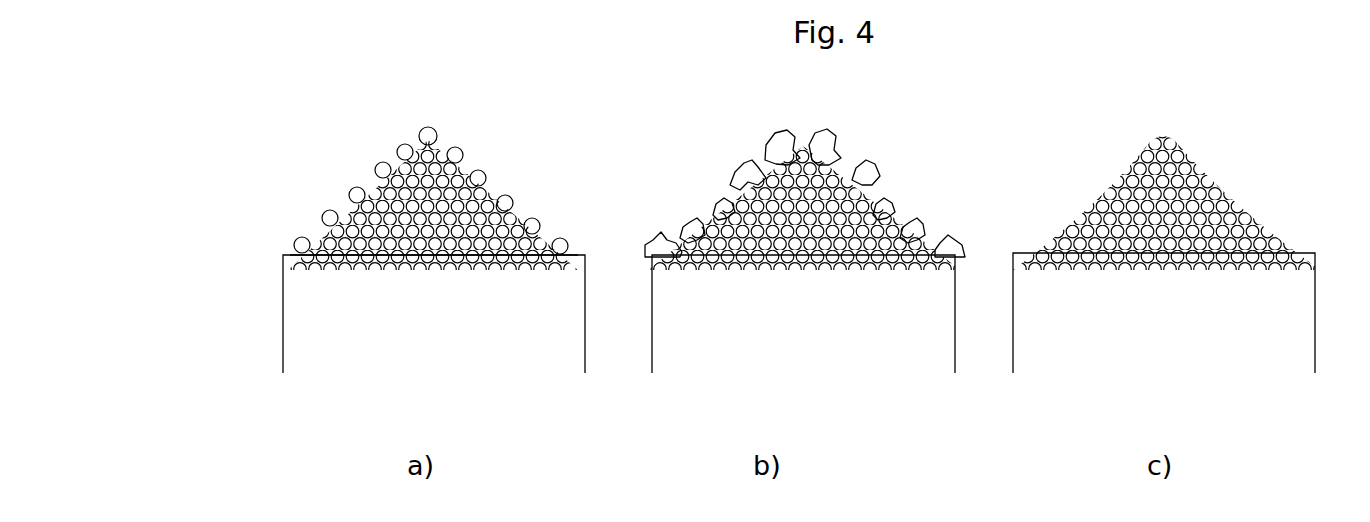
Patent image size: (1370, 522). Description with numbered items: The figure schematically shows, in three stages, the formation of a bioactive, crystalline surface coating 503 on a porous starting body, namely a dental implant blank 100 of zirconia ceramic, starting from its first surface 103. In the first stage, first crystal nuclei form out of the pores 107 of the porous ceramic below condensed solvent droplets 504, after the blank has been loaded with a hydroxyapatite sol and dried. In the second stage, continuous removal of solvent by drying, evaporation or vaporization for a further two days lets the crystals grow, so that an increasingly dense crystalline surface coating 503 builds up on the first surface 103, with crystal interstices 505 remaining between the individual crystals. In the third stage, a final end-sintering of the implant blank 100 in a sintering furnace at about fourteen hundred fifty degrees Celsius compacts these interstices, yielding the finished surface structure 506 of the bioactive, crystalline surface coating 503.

The dental implant blank 100 is at (799, 313).
The first surface 103 is at (417, 183).
The pores 107 is at (376, 307).
The bioactive, crystalline surface coating 503 is at (872, 177).
The condensed solvent droplets 504 is at (352, 78).
The crystal interstices 505 is at (805, 154).
The surface structure 506 is at (1170, 153).